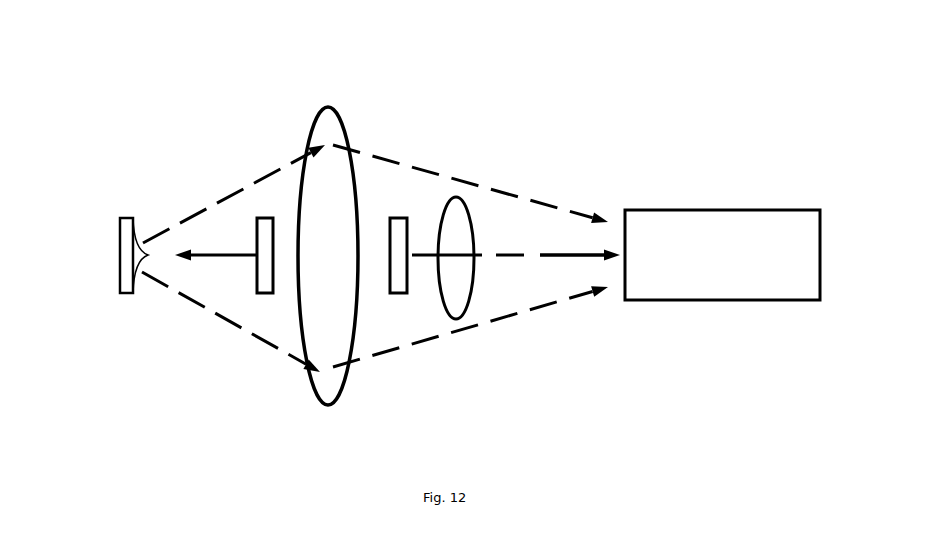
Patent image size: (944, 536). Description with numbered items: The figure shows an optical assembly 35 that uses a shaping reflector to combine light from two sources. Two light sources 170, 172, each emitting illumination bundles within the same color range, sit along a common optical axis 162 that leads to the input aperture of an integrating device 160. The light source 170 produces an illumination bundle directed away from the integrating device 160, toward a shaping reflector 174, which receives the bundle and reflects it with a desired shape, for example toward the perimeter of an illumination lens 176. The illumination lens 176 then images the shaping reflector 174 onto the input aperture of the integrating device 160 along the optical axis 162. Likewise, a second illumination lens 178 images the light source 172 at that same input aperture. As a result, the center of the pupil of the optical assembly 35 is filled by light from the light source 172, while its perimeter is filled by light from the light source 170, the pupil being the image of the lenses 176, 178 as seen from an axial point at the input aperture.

The optical assembly 35 is at (128, 218).
The integrating device 160 is at (708, 300).
The optical axis 162 is at (560, 253).
The light source 170 is at (258, 290).
The light source 172 is at (405, 293).
The shaping reflector 174 is at (120, 287).
The illumination lens 176 is at (330, 383).
The illumination lens 178 is at (467, 303).